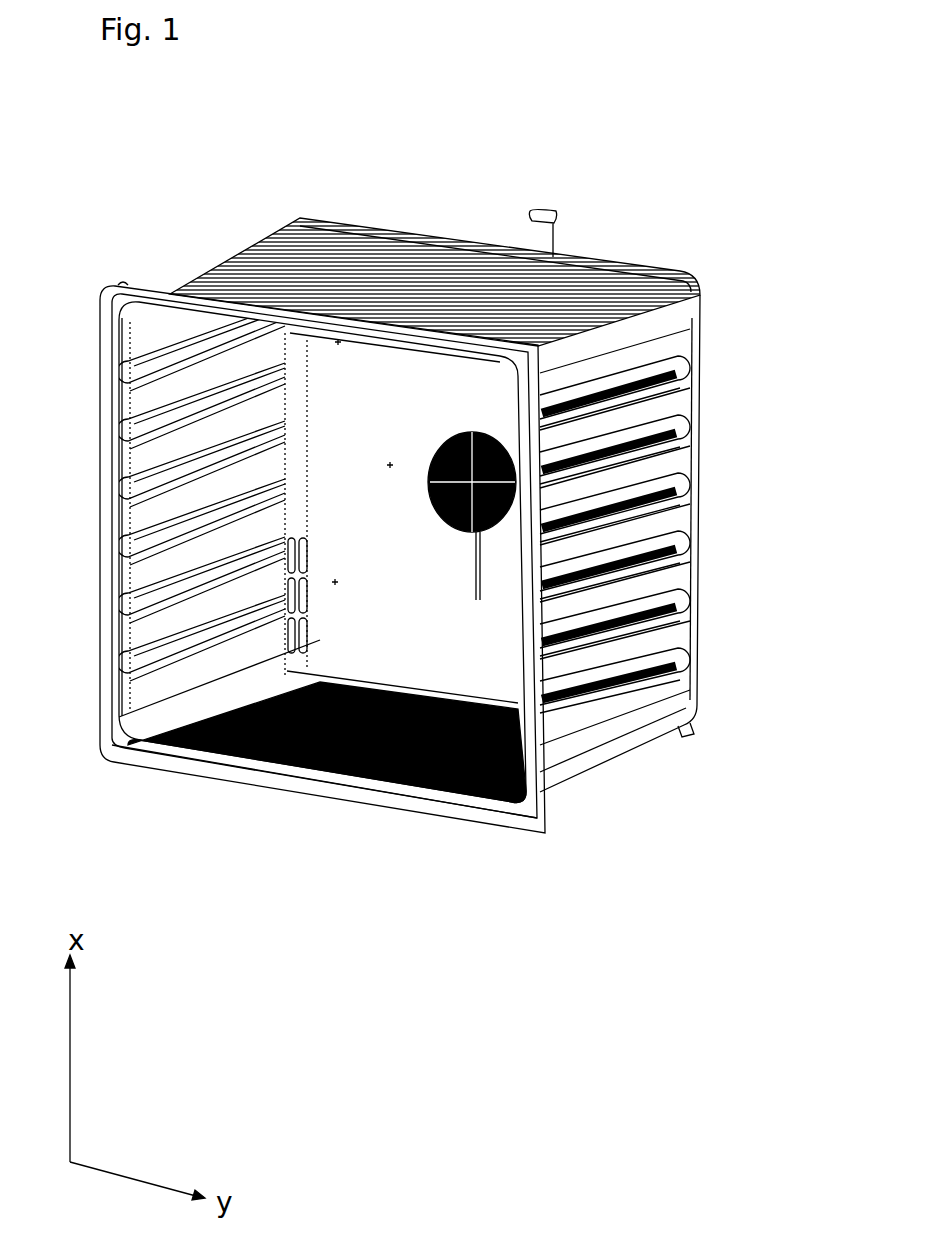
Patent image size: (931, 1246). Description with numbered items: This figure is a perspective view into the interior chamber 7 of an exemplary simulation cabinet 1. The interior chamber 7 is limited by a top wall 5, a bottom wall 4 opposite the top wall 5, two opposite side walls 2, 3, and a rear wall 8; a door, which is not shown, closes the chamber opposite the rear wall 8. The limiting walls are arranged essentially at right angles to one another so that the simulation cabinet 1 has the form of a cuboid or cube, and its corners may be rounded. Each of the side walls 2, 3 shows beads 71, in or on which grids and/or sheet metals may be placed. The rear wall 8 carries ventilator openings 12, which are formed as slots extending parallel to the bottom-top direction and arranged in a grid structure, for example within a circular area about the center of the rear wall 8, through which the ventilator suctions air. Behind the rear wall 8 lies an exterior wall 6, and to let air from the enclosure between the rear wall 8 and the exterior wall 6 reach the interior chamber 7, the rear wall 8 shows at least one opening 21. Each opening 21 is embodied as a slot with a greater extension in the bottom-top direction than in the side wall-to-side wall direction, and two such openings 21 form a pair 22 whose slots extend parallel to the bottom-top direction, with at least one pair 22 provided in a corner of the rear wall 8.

The simulation cabinet 1 is at (545, 155).
The side wall 2 is at (148, 562).
The side wall 3 is at (632, 652).
The bottom wall 4 is at (347, 737).
The top wall 5 is at (296, 276).
The exterior wall 6 is at (628, 268).
The interior chamber 7 is at (308, 474).
The rear wall 8 is at (400, 385).
The ventilator openings 12 is at (465, 537).
The opening 21 is at (300, 680).
The pair of openings 22 is at (284, 625).
The beads 71 is at (175, 652).